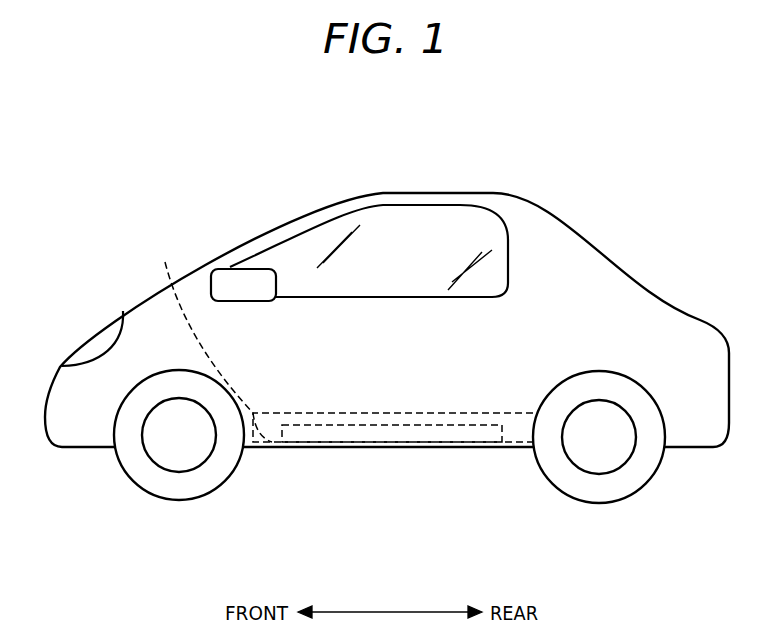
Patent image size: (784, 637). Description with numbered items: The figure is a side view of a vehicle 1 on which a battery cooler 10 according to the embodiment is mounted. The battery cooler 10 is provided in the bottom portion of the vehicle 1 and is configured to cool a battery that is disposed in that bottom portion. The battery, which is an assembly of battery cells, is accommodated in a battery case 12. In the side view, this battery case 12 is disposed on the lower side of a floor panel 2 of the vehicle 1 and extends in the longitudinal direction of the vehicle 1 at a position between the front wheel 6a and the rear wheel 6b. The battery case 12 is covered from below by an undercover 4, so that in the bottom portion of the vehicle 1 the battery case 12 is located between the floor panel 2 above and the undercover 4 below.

The vehicle 1 is at (292, 174).
The floor panel 2 is at (213, 336).
The undercover 4 is at (253, 450).
The front wheel 6a is at (136, 477).
The rear wheel 6b is at (640, 475).
The battery cooler 10 is at (367, 457).
The battery case 12 is at (313, 430).